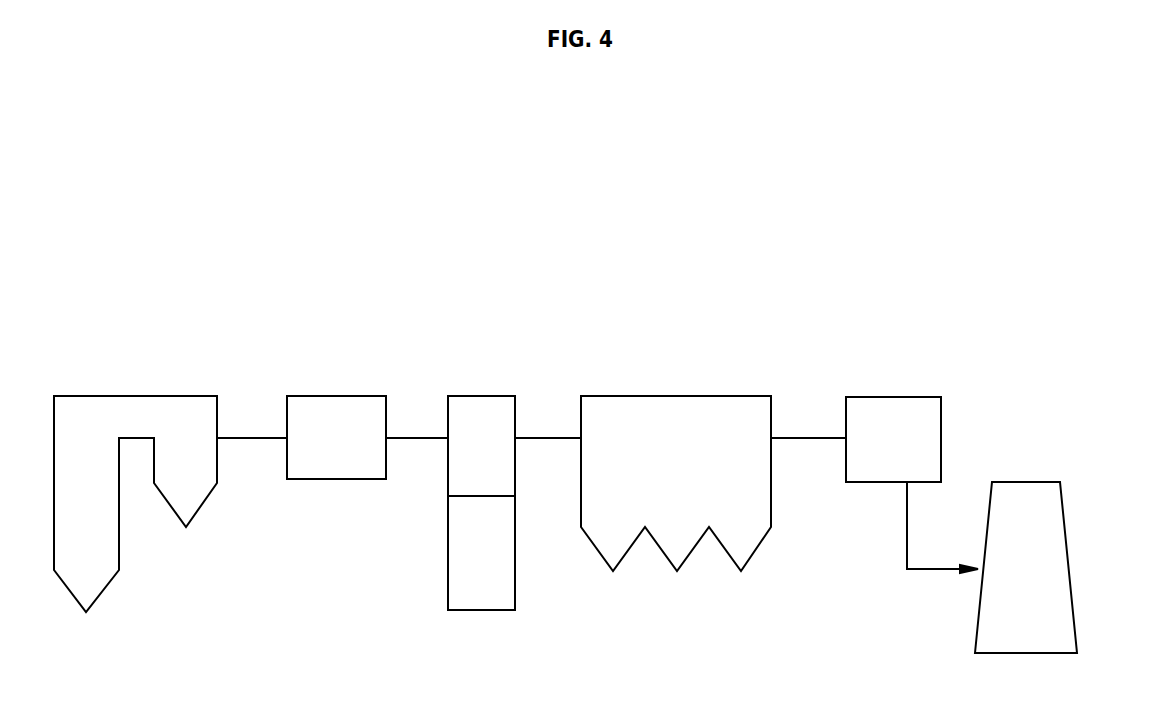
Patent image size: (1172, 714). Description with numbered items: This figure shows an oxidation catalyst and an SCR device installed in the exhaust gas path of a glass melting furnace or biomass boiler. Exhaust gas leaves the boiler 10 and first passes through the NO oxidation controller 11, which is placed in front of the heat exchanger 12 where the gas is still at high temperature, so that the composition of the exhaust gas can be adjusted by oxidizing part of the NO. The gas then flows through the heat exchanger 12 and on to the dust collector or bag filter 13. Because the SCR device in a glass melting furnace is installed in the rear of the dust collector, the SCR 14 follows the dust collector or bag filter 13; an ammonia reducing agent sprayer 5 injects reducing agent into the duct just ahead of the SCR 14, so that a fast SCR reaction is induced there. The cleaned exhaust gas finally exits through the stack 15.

The ammonia reducing agent sprayer 5 is at (836, 367).
The boiler 10 is at (135, 504).
The NO oxidation controller 11 is at (336, 437).
The heat exchanger 12 is at (481, 525).
The dust collector or bag filter 13 is at (676, 483).
The SCR 14 is at (893, 439).
The stack 15 is at (1047, 567).